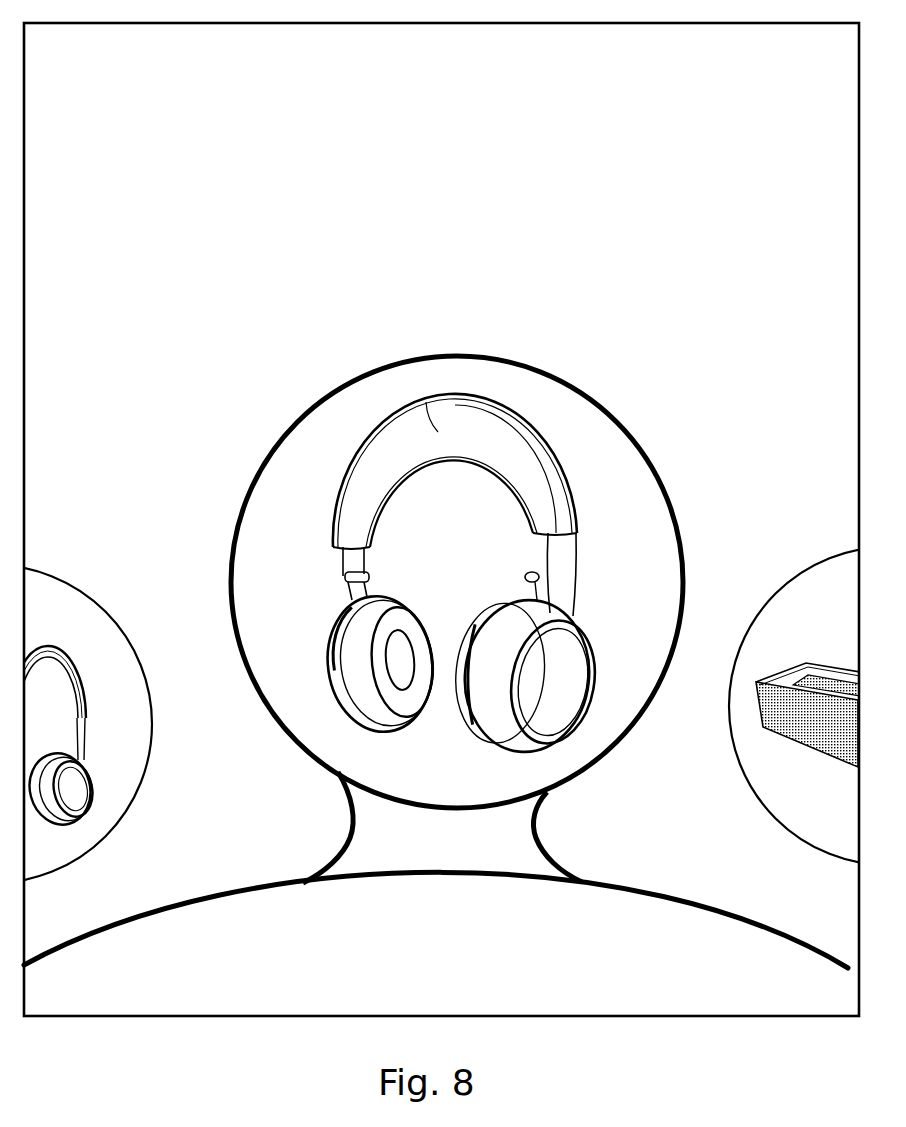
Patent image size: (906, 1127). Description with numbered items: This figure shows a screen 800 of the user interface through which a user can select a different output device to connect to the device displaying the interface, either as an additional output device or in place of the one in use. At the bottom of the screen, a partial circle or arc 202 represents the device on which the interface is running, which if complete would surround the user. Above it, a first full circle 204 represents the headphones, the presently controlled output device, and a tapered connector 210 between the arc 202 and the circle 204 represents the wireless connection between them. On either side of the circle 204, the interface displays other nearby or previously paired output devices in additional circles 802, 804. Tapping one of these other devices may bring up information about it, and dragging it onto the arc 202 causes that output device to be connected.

The screen 800 is at (90, 66).
The partial circle or arc 202 is at (737, 928).
The first full circle 204 is at (587, 770).
The tapered connector 210 is at (338, 849).
The additional circle 802 is at (122, 628).
The additional circle 804 is at (769, 600).